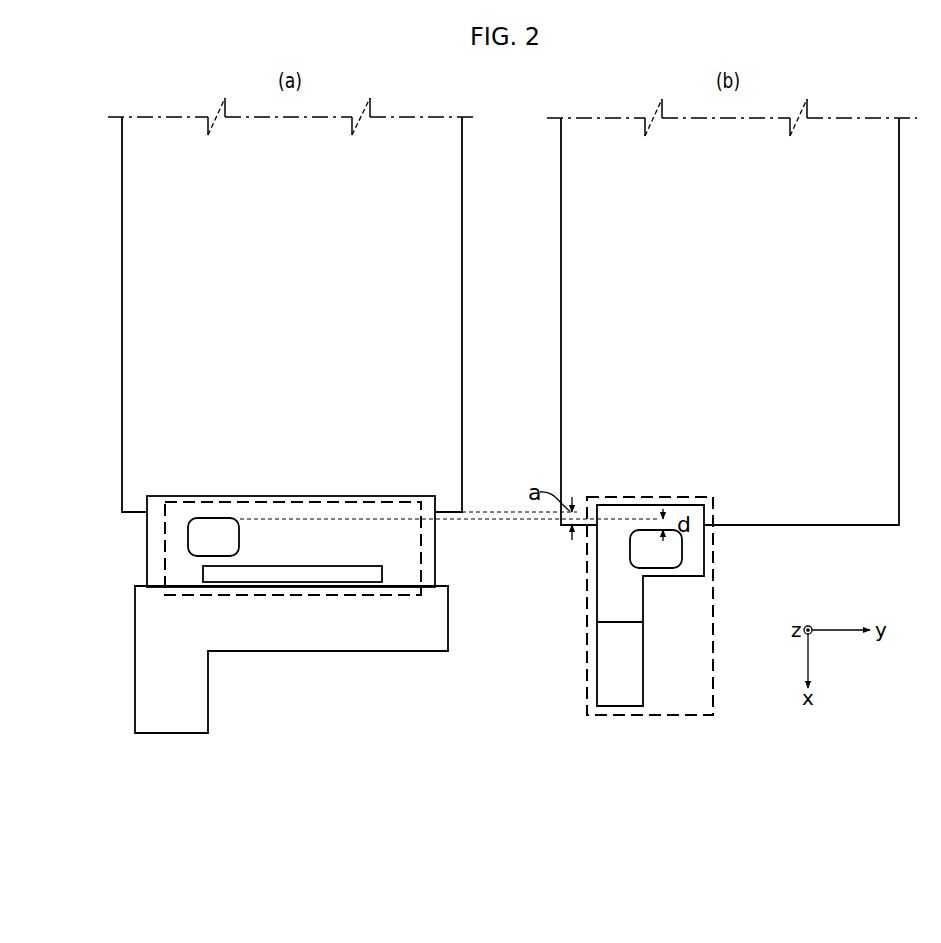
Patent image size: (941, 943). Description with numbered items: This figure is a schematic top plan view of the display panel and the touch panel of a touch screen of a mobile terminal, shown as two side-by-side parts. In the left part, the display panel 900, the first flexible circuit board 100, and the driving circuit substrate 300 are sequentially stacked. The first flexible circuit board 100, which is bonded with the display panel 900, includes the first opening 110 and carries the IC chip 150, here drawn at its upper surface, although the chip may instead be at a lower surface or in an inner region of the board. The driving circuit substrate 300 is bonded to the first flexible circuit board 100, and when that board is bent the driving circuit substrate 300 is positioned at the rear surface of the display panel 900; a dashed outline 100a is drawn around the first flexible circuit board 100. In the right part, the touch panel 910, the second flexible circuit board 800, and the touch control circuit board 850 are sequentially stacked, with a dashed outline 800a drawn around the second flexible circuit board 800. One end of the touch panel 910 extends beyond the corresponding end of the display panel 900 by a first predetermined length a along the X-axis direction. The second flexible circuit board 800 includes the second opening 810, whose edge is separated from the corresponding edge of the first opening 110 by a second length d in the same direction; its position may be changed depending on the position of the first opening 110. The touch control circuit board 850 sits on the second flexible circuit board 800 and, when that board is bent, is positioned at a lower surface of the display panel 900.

The first flexible circuit board 100 is at (437, 530).
The first substrate region 100a is at (422, 575).
The first opening 110 is at (197, 543).
The IC chip 150 is at (342, 581).
The driving circuit substrate 300 is at (428, 651).
The second flexible circuit board 800 is at (607, 609).
The second substrate region 800a is at (587, 553).
The second opening 810 is at (670, 543).
The touch control circuit board 850 is at (597, 668).
The display panel 900 is at (462, 302).
The touch panel 910 is at (560, 240).